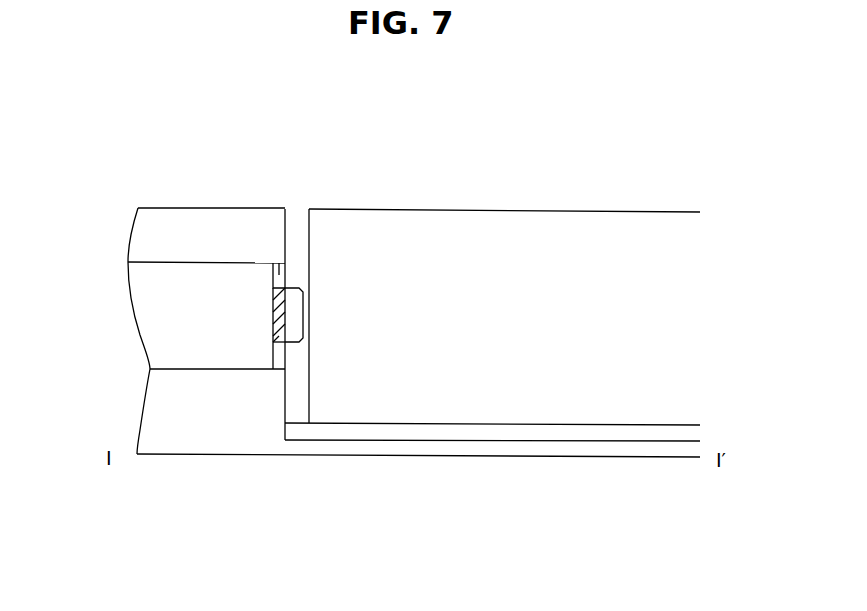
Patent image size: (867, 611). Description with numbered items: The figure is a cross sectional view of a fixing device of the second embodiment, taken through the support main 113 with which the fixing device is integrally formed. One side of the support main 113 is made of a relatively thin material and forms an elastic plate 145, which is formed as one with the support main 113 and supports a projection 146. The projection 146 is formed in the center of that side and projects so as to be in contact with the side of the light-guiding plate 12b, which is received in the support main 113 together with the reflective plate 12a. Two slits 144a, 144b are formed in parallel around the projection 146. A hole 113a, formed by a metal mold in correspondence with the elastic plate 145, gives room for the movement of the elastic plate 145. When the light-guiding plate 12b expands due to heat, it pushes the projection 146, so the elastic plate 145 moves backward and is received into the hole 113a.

The support main 113 is at (211, 425).
The hole 113a is at (158, 307).
The slit 144a is at (279, 273).
The slit 144b is at (275, 355).
The elastic plate 145 is at (272, 300).
The projection 146 is at (290, 319).
The reflective plate 12a is at (462, 430).
The light-guiding plate 12b is at (533, 397).